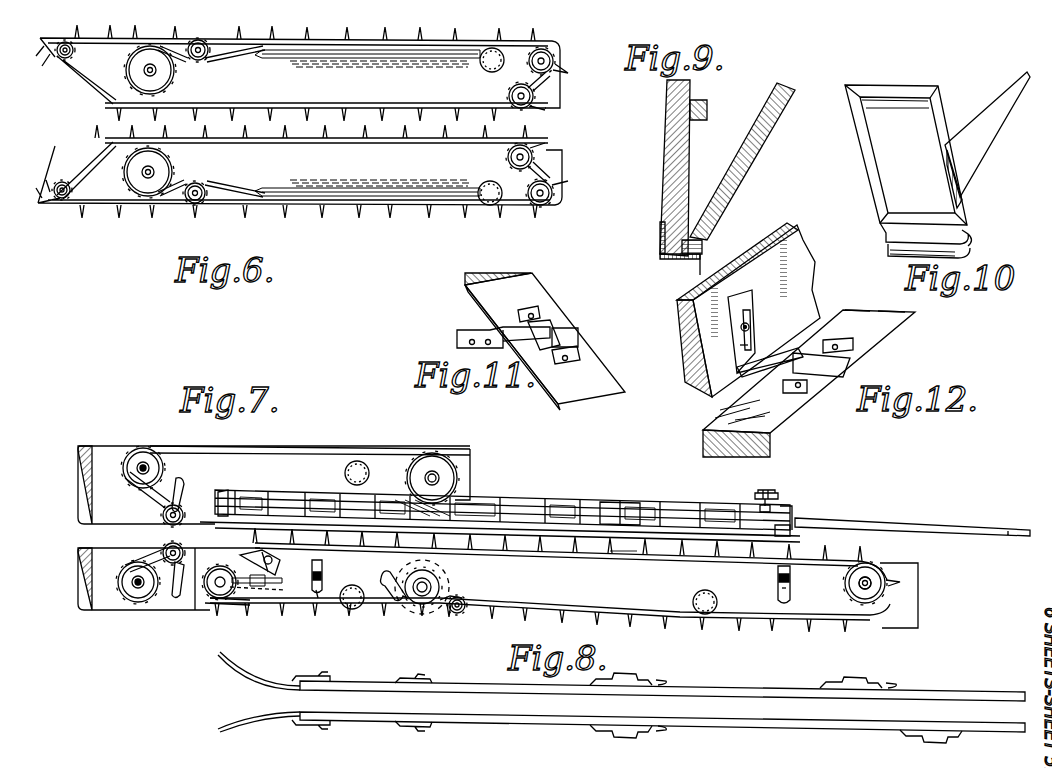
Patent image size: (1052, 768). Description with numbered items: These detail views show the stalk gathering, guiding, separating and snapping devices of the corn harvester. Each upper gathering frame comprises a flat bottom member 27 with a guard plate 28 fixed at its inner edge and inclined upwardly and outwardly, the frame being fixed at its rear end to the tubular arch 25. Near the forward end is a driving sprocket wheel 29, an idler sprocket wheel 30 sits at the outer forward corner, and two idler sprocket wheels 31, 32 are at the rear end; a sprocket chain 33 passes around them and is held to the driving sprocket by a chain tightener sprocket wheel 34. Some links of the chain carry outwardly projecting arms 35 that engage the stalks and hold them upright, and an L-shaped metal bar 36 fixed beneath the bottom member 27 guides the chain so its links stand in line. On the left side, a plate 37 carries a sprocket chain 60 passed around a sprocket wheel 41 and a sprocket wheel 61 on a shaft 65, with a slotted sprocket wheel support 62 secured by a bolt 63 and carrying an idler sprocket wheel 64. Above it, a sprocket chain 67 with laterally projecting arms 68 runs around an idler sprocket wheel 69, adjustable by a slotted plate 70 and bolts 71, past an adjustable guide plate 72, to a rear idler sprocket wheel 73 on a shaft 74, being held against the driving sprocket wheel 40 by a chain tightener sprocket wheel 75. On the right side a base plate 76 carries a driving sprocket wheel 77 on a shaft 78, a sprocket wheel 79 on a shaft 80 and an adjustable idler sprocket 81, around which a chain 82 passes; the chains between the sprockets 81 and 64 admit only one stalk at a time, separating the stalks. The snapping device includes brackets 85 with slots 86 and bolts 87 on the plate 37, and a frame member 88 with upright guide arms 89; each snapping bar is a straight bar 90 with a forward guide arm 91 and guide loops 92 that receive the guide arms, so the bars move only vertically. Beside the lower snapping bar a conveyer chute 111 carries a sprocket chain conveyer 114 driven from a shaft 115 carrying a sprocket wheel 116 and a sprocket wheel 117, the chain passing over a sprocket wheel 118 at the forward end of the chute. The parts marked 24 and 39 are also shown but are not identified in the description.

In FIG. 7, the roller 24 is at (710, 612).
In FIG. 6, the tubular arch 25 is at (494, 52).
In FIG. 7, the tubular arch 25 is at (360, 462).
In FIG. 6, the flat bottom member 27 is at (168, 75).
In FIG. 9, the flat bottom member 27 is at (690, 150).
In FIG. 9, the guard plate 28 is at (742, 170).
In FIG. 6, the driving sprocket wheel 29 is at (173, 77).
In FIG. 6, the idler sprocket wheel 30 is at (75, 54).
In FIG. 6, the idler sprocket wheel 31 is at (534, 97).
In FIG. 6, the idler sprocket wheel 32 is at (554, 57).
In FIG. 6, the sprocket chain 33 is at (335, 60).
In FIG. 9, the sprocket chain 33 is at (675, 262).
In FIG. 10, the sprocket chain 33 is at (893, 92).
In FIG. 6, the chain tightener sprocket wheel 34 is at (198, 42).
In FIG. 6, the outwardly projecting arms 35 is at (402, 30).
In FIG. 9, the outwardly projecting arms 35 is at (703, 252).
In FIG. 10, the outwardly projecting arms 35 is at (977, 160).
In FIG. 6, the L-shaped metal bar 36 is at (370, 103).
In FIG. 9, the L-shaped metal bar 36 is at (660, 235).
In FIG. 6, the plate 37 is at (299, 171).
In FIG. 7, the plate 37 is at (640, 556).
In FIG. 7, the gear 39 is at (430, 582).
In FIG. 7, the driving sprocket wheel 40 is at (420, 600).
In FIG. 7, the sprocket wheel 41 is at (398, 598).
In FIG. 7, the sprocket chain 60 is at (168, 610).
In FIG. 7, the sprocket wheel 61 is at (128, 594).
In FIG. 7, the slotted sprocket wheel support 62 is at (210, 570).
In FIG. 7, the bolt 63 is at (170, 565).
In FIG. 7, the idler sprocket wheel 64 is at (168, 546).
In FIG. 7, the shaft 65 is at (128, 582).
In FIG. 7, the sprocket chain 67 is at (300, 603).
In FIG. 7, the laterally projecting arms 68 is at (637, 551).
In FIG. 7, the idler sprocket wheel 69 is at (212, 603).
In FIG. 7, the slotted plate 70 is at (280, 580).
In FIG. 7, the bolts 71 is at (283, 591).
In FIG. 7, the adjustable guide plate 72 is at (270, 560).
In FIG. 7, the idler sprocket wheel 73 is at (875, 568).
In FIG. 7, the shaft 74 is at (871, 585).
In FIG. 7, the chain tightener sprocket wheel 75 is at (462, 613).
In FIG. 7, the base plate 76 is at (360, 490).
In FIG. 7, the driving sprocket wheel 77 is at (436, 462).
In FIG. 7, the shaft 78 is at (436, 474).
In FIG. 7, the sprocket wheel 79 is at (143, 468).
In FIG. 7, the shaft 80 is at (143, 468).
In FIG. 7, the adjustable idler sprocket 81 is at (180, 512).
In FIG. 7, the chain 82 is at (262, 446).
In FIG. 12, the bracket 85 is at (772, 363).
In FIG. 7, the bracket 85 is at (322, 566).
In FIG. 12, the slots 86 is at (742, 346).
In FIG. 7, the slots 86 is at (331, 588).
In FIG. 12, the bolts 87 is at (748, 325).
In FIG. 7, the bolts 87 is at (322, 576).
In FIG. 7, the frame member 88 is at (870, 524).
In FIG. 11, the upright guide arms 89 is at (578, 338).
In FIG. 7, the upright guide arms 89 is at (790, 530).
In FIG. 11, the straight bar 90 is at (600, 363).
In FIG. 12, the straight bar 90 is at (809, 383).
In FIG. 8, the straight bar 90 is at (660, 684).
In FIG. 8, the guide arm 91 is at (252, 720).
In FIG. 11, the guide loops 92 is at (540, 313).
In FIG. 12, the guide loops 92 is at (850, 348).
In FIG. 8, the guide loops 92 is at (432, 672).
In FIG. 7, the conveyer chute 111 is at (535, 500).
In FIG. 7, the sprocket chain conveyer 114 is at (600, 502).
In FIG. 7, the shaft 115 is at (790, 510).
In FIG. 7, the sprocket wheel 116 is at (760, 505).
In FIG. 7, the sprocket wheel 117 is at (770, 490).
In FIG. 7, the sprocket wheel 118 is at (225, 490).